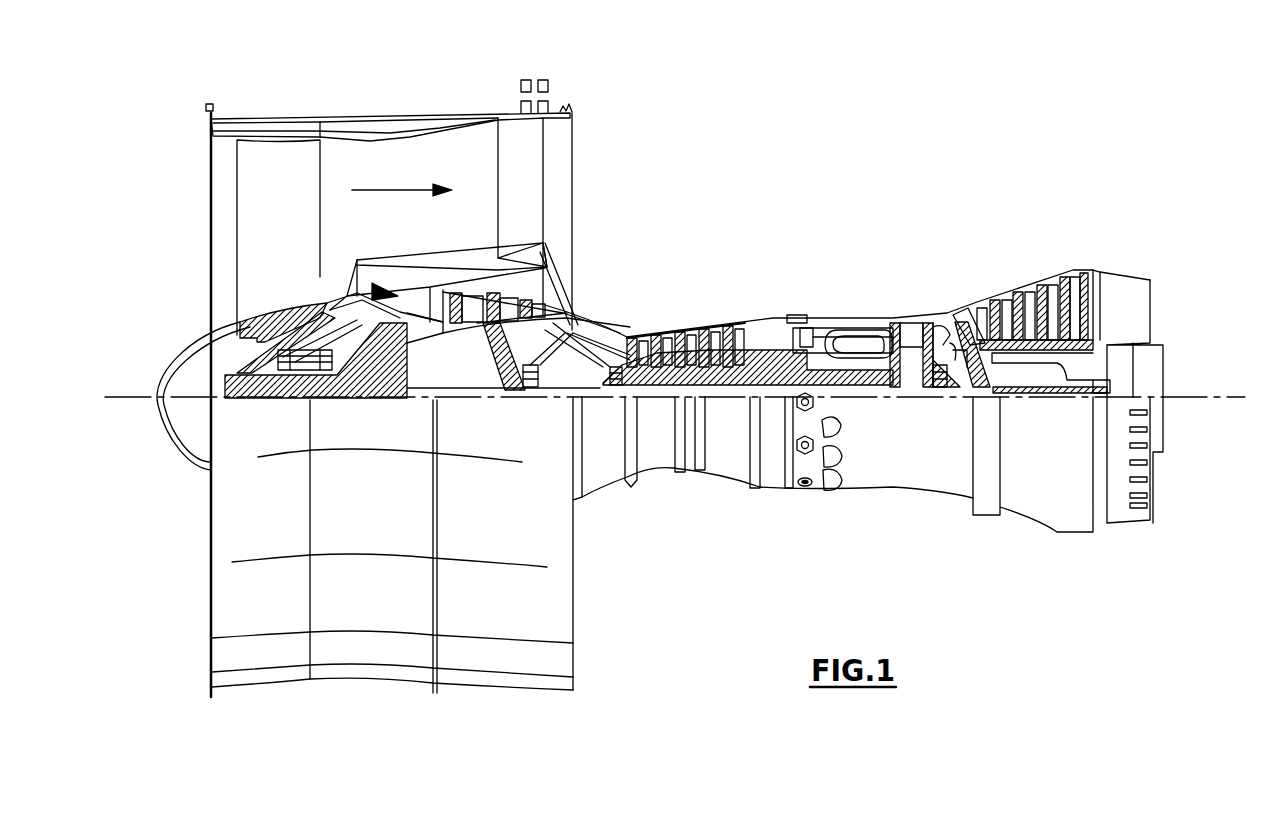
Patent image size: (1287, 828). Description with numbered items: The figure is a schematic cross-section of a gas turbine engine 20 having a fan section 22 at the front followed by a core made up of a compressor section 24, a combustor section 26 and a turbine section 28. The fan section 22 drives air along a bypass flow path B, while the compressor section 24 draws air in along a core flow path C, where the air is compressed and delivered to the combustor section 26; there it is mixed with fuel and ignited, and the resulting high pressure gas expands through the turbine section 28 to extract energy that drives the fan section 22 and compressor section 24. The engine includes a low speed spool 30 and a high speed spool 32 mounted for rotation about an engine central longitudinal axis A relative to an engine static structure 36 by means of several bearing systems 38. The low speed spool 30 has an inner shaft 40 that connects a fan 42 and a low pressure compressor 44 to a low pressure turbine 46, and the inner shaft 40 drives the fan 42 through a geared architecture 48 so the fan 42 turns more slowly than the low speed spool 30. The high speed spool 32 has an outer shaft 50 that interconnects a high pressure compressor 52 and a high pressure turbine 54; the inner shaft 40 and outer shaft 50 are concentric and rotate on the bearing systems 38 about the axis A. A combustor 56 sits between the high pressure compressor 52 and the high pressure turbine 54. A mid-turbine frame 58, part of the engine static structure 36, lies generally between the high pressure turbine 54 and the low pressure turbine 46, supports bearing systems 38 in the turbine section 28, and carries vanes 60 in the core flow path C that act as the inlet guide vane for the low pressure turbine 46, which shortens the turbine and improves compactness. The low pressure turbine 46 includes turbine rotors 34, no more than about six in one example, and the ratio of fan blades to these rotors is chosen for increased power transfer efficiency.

The gas turbine engine 20 is at (855, 163).
The fan section 22 is at (418, 87).
The compressor section 24 is at (430, 236).
The combustor section 26 is at (863, 287).
The turbine section 28 is at (1010, 290).
The low speed spool 30 is at (730, 400).
The high speed spool 32 is at (772, 370).
The turbine rotors 34 is at (1057, 378).
The engine static structure 36 is at (770, 488).
The bearing systems 38 is at (288, 388).
The inner shaft 40 is at (593, 400).
The fan 42 is at (262, 245).
The low pressure compressor section 44 is at (522, 300).
The low pressure turbine section 46 is at (1032, 285).
The geared architecture 48 is at (396, 385).
The outer shaft 50 is at (856, 398).
The high pressure compressor section 52 is at (706, 365).
The high pressure turbine section 54 is at (909, 318).
The combustor 56 is at (848, 345).
The mid-turbine frame 58 is at (955, 307).
The vanes 60 is at (987, 380).
The engine central longitudinal axis A is at (1245, 397).
The bypass flow path B is at (385, 190).
The core flow path C is at (378, 291).